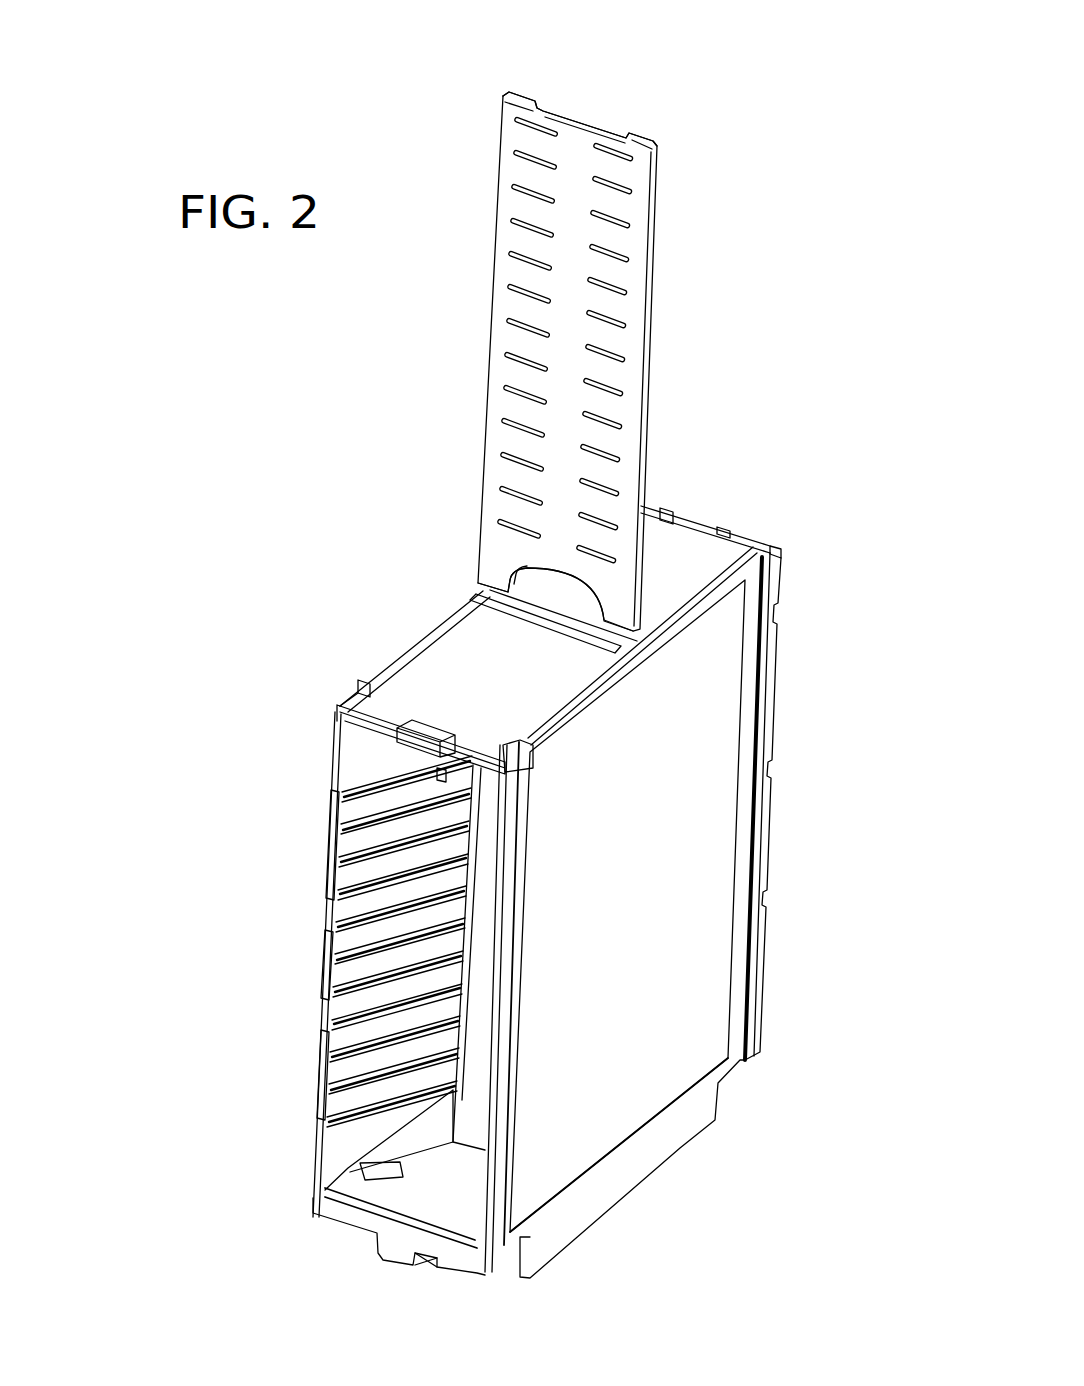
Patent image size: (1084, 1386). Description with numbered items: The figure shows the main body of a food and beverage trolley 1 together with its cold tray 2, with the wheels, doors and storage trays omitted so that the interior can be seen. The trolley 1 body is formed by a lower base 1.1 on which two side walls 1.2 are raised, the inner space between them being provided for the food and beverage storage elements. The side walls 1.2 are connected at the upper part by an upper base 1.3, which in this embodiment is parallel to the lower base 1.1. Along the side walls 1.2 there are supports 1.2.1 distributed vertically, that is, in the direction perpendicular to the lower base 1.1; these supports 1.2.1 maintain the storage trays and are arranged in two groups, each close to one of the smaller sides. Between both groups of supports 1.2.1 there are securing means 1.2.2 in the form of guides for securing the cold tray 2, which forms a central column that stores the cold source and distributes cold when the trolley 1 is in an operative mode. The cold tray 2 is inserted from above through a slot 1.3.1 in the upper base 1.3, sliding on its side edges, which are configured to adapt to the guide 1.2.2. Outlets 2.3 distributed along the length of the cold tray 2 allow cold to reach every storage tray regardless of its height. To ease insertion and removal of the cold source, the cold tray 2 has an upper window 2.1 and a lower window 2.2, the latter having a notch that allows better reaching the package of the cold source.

The trolley 1 is at (655, 999).
The lower base 1.1 is at (385, 1138).
The side wall 1.2 is at (648, 837).
The supports 1.2.1 is at (390, 1050).
The securing means 1.2.2 is at (452, 898).
The upper base 1.3 is at (467, 687).
The slot 1.3.1 is at (600, 643).
The cold tray 2 is at (457, 431).
The upper window 2.1 is at (574, 108).
The lower window 2.2 is at (560, 580).
The outlets 2.3 is at (620, 460).